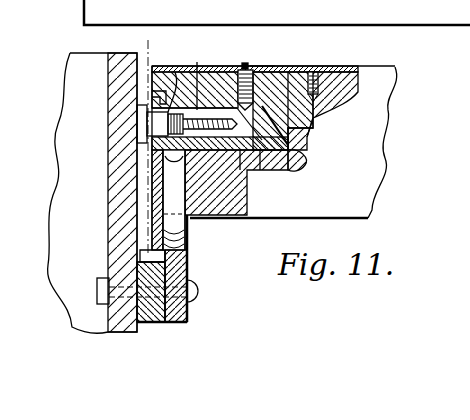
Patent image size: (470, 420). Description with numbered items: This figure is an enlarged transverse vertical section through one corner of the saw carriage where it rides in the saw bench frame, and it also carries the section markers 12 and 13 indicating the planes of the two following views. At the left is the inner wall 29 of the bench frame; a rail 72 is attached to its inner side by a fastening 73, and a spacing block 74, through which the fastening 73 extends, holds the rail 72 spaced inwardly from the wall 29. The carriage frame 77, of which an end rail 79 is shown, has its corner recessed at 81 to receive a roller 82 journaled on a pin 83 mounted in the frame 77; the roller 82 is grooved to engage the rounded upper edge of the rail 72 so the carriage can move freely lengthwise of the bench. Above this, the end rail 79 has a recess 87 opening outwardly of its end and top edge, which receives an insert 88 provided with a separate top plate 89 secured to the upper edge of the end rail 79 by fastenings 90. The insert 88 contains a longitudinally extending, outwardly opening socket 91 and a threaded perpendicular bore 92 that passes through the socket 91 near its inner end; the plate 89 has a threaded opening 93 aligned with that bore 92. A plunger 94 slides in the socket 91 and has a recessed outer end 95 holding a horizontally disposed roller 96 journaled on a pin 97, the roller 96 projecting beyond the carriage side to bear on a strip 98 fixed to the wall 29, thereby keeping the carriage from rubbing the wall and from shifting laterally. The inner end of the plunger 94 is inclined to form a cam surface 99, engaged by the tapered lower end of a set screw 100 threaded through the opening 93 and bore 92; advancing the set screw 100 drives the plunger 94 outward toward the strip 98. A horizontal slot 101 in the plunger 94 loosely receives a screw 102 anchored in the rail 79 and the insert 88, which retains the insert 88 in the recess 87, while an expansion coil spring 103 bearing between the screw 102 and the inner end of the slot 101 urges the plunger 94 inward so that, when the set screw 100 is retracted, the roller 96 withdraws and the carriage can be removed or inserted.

The section line 12- 12 is at (156, 43).
The wall / section line 13- 13 is at (98, 288).
The inner wall 29 is at (107, 250).
The rail 72 is at (188, 318).
The fastening 73 is at (116, 296).
The spacing block 74 is at (146, 309).
The carriage frame 77 is at (386, 65).
The end rail 79 is at (293, 142).
The recess 81 is at (190, 157).
The roller 82 is at (184, 246).
The pin 83 is at (135, 199).
The recess 87 is at (297, 150).
The insert 88 is at (264, 82).
The top plate 89 is at (291, 66).
The fastening 90 is at (318, 66).
The socket 91 is at (282, 168).
The bore 92 is at (260, 168).
The threaded opening 93 is at (262, 66).
The plunger 94 is at (259, 210).
The recessed outer end 95 is at (253, 62).
The roller 96 is at (157, 123).
The pin 97 is at (157, 94).
The strip 98 is at (137, 111).
The cam surface 99 is at (294, 128).
The set screw 100 is at (250, 64).
The slot 101 is at (210, 82).
The screw 102 is at (181, 83).
The expansion coil spring 103 is at (222, 130).